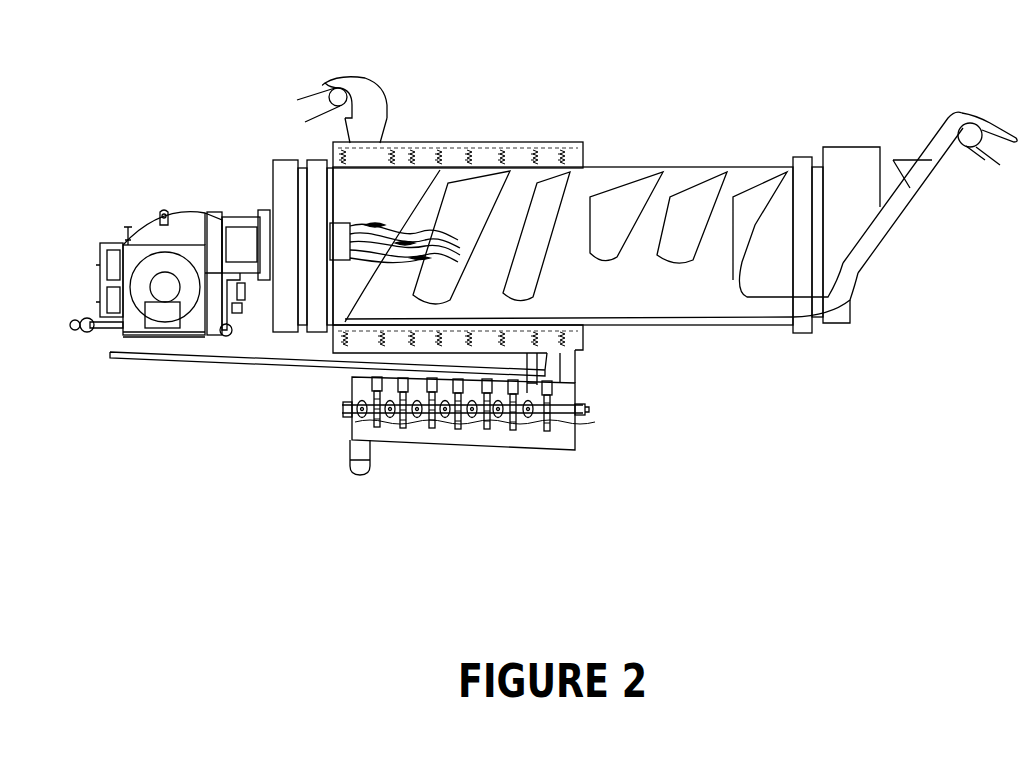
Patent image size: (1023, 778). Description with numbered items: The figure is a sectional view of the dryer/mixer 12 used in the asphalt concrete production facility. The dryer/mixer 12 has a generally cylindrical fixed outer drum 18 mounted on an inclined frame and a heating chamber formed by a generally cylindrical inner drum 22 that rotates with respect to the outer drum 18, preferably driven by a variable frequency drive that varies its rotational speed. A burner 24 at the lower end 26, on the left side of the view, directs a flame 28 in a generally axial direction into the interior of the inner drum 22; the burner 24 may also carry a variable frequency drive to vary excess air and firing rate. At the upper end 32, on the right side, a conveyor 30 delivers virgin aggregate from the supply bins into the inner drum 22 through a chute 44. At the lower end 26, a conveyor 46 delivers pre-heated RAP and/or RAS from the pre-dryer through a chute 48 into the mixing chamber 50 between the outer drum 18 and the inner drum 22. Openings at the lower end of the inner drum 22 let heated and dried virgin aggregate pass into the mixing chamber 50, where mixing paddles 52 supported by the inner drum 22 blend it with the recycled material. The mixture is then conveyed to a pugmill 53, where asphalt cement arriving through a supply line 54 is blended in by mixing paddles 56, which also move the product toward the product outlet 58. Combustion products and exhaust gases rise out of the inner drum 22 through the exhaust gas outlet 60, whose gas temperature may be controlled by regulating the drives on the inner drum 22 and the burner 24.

The dryer/mixer 12 is at (680, 97).
The outer drum 18 is at (510, 140).
The inner drum 22 is at (680, 165).
The burner 24 is at (190, 207).
The lower end 26 is at (97, 227).
The flame 28 is at (378, 252).
The conveyor 30 is at (977, 163).
The upper end 32 is at (900, 120).
The chute 44 is at (897, 230).
The conveyor 46 is at (313, 83).
The chute 48 is at (387, 137).
The mixing chamber 50 is at (567, 138).
The mixing paddles 52 is at (410, 140).
The pugmill 53 is at (580, 397).
The supply line 54 is at (243, 367).
The mixing paddles 56 is at (370, 382).
The product outlet 58 is at (373, 453).
The exhaust gas outlet 60 is at (847, 143).